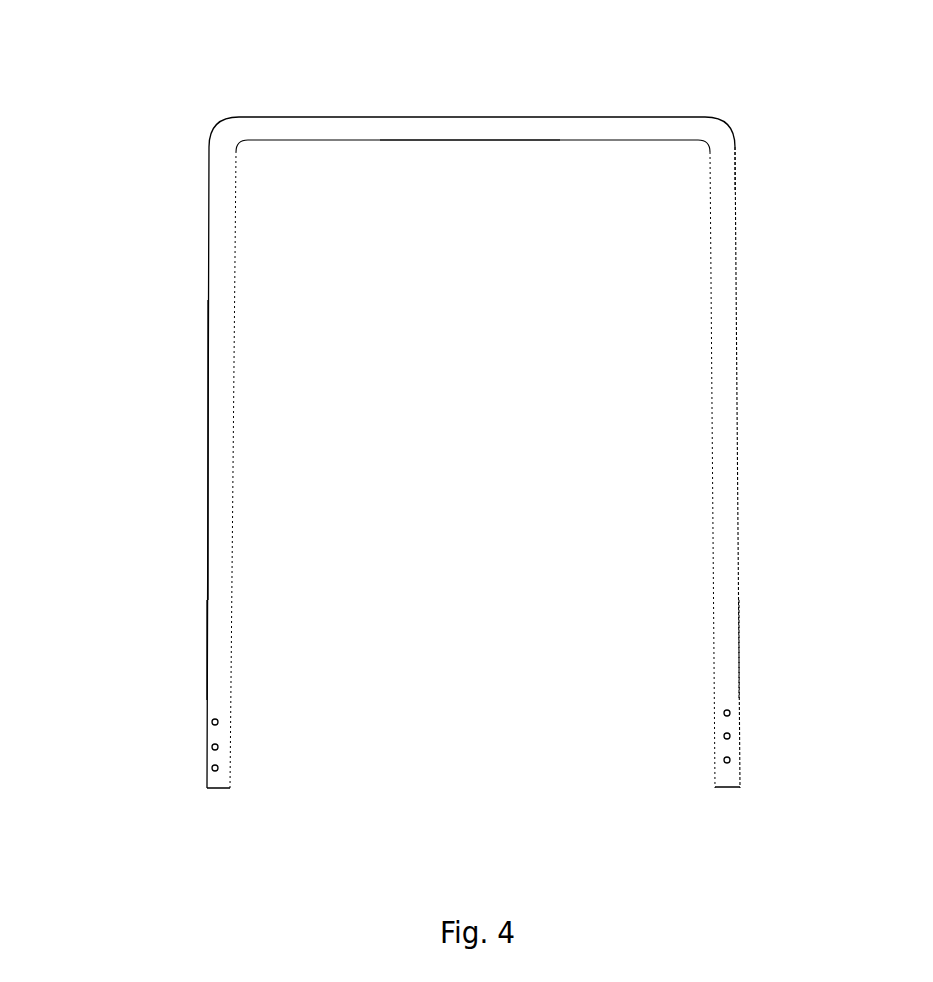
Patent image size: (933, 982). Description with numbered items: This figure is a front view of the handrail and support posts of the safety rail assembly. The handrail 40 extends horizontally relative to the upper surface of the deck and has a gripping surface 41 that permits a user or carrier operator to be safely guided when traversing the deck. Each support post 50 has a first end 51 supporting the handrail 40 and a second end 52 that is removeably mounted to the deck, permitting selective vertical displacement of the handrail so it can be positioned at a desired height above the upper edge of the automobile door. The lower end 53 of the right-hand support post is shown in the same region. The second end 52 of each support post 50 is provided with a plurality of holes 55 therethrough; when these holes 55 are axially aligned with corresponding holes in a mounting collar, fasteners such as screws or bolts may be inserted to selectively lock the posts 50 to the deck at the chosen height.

The handrail 40 is at (522, 117).
The gripping surface 41 is at (375, 133).
The support post 50 is at (218, 478).
The first end 51 is at (725, 155).
The second end 52 is at (222, 594).
The right leg lower portion 53 is at (717, 683).
The holes 55 is at (212, 768).